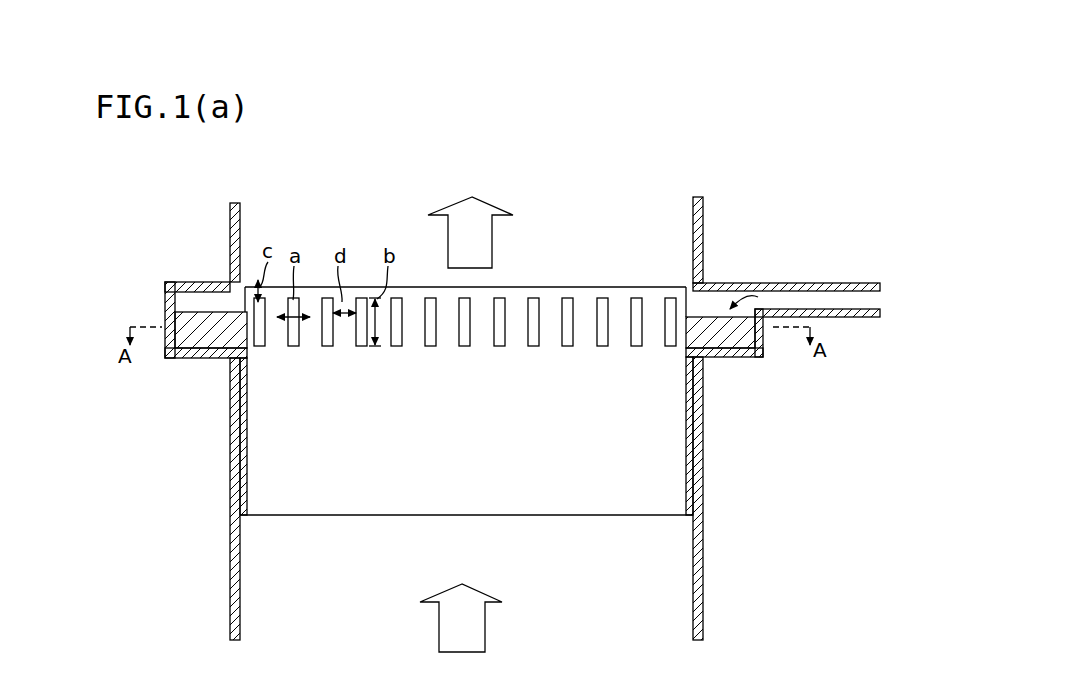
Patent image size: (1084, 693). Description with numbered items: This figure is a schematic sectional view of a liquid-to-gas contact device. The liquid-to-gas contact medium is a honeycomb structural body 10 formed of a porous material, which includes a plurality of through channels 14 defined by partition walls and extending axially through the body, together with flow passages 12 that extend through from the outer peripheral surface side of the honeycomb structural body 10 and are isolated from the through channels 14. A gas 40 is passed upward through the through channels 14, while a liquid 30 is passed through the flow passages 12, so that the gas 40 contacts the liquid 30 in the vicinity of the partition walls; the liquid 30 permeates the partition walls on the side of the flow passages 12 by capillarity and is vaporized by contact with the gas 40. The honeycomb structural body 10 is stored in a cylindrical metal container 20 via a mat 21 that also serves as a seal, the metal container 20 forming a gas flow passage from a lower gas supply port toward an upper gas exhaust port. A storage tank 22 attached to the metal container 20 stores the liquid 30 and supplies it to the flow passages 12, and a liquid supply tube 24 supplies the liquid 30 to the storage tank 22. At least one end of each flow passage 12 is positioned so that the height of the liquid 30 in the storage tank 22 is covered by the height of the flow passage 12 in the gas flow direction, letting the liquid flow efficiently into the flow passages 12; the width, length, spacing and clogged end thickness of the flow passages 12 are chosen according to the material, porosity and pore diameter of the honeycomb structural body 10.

The honeycomb structural body 10 is at (607, 455).
The flow passages 12 is at (347, 342).
The through channels (cells) 14 is at (563, 286).
The metal container 20 is at (703, 590).
The mat 21 is at (695, 425).
The storage tank 22 is at (765, 343).
The liquid supply tube 24 is at (843, 300).
The liquid 30 is at (730, 340).
The gas 40 is at (461, 636).